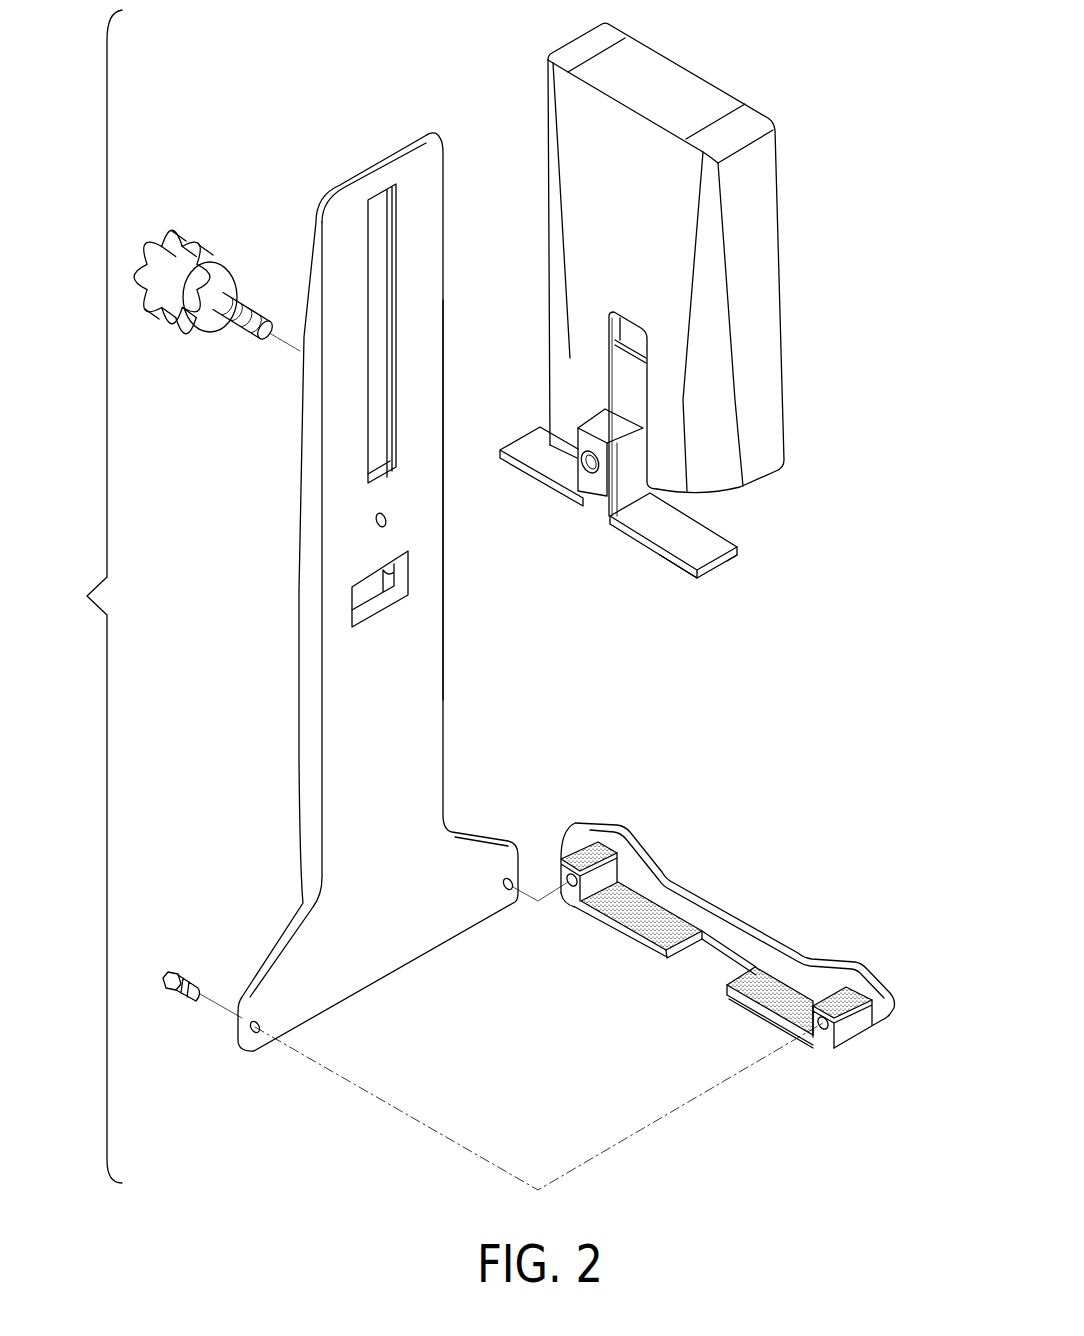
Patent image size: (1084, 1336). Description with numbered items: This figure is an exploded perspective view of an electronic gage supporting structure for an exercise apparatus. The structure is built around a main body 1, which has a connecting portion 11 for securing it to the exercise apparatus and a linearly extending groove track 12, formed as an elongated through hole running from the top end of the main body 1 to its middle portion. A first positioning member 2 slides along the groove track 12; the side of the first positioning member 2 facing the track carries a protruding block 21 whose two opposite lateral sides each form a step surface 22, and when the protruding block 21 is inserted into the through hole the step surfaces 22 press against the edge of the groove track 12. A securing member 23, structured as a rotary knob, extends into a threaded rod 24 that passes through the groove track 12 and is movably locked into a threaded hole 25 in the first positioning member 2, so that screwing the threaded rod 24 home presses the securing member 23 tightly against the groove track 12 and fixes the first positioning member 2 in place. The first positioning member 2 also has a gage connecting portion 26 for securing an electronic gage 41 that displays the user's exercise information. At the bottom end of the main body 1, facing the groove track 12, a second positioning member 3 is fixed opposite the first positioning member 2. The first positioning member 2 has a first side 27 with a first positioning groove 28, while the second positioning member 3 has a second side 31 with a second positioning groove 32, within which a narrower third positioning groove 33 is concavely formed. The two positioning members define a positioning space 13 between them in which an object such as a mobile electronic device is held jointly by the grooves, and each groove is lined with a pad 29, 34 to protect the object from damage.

The main body 1 is at (393, 592).
The connecting portion 11 is at (352, 597).
The groove track 12 is at (378, 260).
The positioning space 13 is at (400, 693).
The first positioning member 2 is at (680, 483).
The protruding block 21 is at (552, 436).
The step surface 22 is at (696, 414).
The securing member 23 is at (178, 240).
The threaded rod 24 is at (247, 300).
The threaded hole 25 is at (584, 463).
The gage connecting portion 26 is at (640, 368).
The first side 27 is at (723, 558).
The first positioning groove 28 is at (703, 571).
The pad 29 is at (632, 534).
The second positioning member 3 is at (691, 956).
The second side 31 is at (727, 912).
The second positioning groove 32 is at (590, 850).
The third positioning groove 33 is at (647, 918).
The pad 34 is at (562, 862).
The electronic gage 41 is at (688, 83).